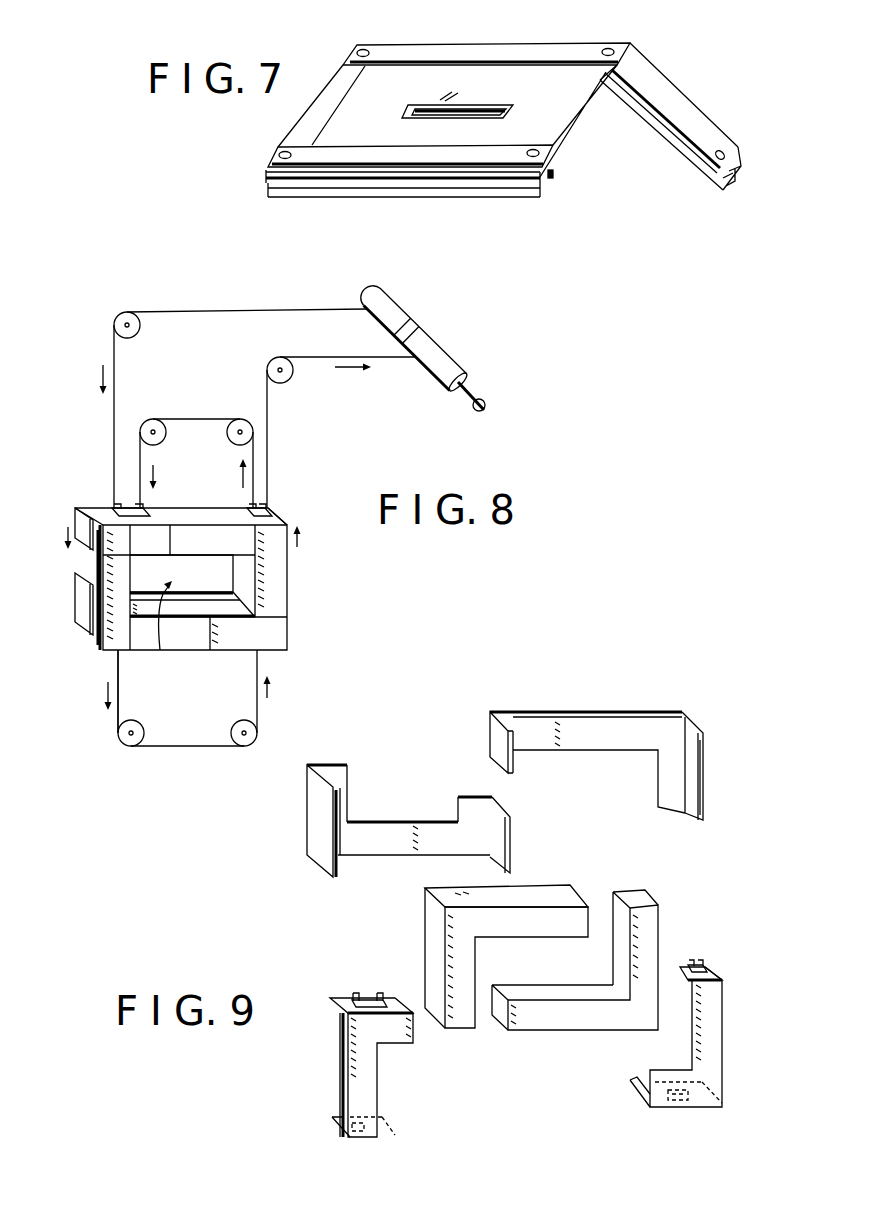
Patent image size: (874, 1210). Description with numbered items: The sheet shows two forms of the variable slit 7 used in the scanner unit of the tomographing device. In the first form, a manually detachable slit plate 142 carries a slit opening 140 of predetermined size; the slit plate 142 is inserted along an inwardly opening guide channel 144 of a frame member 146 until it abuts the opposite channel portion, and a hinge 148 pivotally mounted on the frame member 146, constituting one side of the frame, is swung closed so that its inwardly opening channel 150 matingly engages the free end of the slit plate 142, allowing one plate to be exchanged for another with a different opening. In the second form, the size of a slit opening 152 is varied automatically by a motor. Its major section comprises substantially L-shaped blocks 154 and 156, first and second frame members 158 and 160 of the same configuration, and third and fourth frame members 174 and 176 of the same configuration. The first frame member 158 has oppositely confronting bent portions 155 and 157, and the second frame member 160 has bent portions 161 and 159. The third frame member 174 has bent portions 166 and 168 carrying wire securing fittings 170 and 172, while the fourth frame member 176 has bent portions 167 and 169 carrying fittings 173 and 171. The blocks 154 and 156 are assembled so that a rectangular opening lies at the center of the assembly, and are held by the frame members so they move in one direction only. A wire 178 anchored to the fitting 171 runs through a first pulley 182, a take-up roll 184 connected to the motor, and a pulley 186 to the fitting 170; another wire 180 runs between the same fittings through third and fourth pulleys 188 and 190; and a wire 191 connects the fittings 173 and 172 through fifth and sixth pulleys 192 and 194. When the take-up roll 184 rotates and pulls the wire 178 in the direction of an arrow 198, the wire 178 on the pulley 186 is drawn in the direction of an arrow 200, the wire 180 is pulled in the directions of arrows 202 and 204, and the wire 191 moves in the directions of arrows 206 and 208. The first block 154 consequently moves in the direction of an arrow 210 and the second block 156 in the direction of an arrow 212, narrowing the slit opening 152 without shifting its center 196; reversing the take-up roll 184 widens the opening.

In FIG. 7, the variable slit 7 is at (504, 23).
In FIG. 8, the variable slit 7 is at (338, 582).
In FIG. 7, the slit opening 140 is at (497, 107).
In FIG. 7, the slit plate 142 is at (580, 102).
In FIG. 7, the guide channel 144 is at (553, 178).
In FIG. 7, the frame member 146 is at (302, 183).
In FIG. 7, the hinge 148 is at (710, 137).
In FIG. 7, the channel 150 is at (737, 180).
In FIG. 8, the slit opening 152 is at (224, 567).
In FIG. 8, the first L-shaped block 154 is at (203, 509).
In FIG. 9, the first L-shaped block 154 is at (558, 895).
In FIG. 8, the bent portion 155 is at (82, 598).
In FIG. 9, the bent portion 155 is at (320, 840).
In FIG. 8, the second L-shaped block 156 is at (192, 635).
In FIG. 9, the second L-shaped block 156 is at (570, 1023).
In FIG. 9, the bent portion 157 is at (500, 828).
In FIG. 9, the first frame member 158 is at (397, 830).
In FIG. 9, the bent portion 159 is at (692, 765).
In FIG. 9, the second frame member 160 is at (647, 722).
In FIG. 8, the bent portion 161 is at (75, 510).
In FIG. 9, the bent portion 161 is at (497, 738).
In FIG. 8, the bent portion 166 is at (174, 510).
In FIG. 9, the bent portion 166 is at (340, 1022).
In FIG. 9, the bent portion 167 is at (637, 1100).
In FIG. 9, the bent portion 168 is at (342, 1117).
In FIG. 8, the bent portion 169 is at (283, 517).
In FIG. 9, the bent portion 169 is at (715, 970).
In FIG. 8, the wire securing fitting 170 is at (103, 507).
In FIG. 9, the wire securing fitting 170 is at (368, 998).
In FIG. 8, the wire securing fitting 171 is at (270, 507).
In FIG. 9, the wire securing fitting 171 is at (695, 962).
In FIG. 9, the wire securing fitting 172 is at (350, 1137).
In FIG. 9, the wire securing fitting 173 is at (673, 1107).
In FIG. 8, the third frame member 174 is at (75, 507).
In FIG. 9, the third frame member 174 is at (343, 998).
In FIG. 8, the fourth frame member 176 is at (277, 597).
In FIG. 9, the fourth frame member 176 is at (713, 1038).
In FIG. 8, the wire 178 is at (270, 424).
In FIG. 8, the wire 180 is at (196, 415).
In FIG. 8, the first pulley 182 is at (292, 380).
In FIG. 8, the take-up roll 184 is at (437, 352).
In FIG. 8, the pulley 186 is at (135, 330).
In FIG. 8, the third pulley 188 is at (245, 419).
In FIG. 8, the fourth pulley 190 is at (147, 419).
In FIG. 8, the wire 191 is at (193, 748).
In FIG. 8, the fifth pulley 192 is at (233, 728).
In FIG. 8, the sixth pulley 194 is at (120, 737).
In FIG. 8, the center of slit opening 196 is at (153, 630).
In FIG. 8, the arrow 198 is at (350, 372).
In FIG. 8, the arrow 200 is at (100, 368).
In FIG. 8, the arrow 202 is at (155, 466).
In FIG. 8, the arrow 204 is at (240, 463).
In FIG. 8, the arrow 206 is at (100, 690).
In FIG. 8, the arrow 208 is at (272, 683).
In FIG. 8, the arrow 210 is at (62, 529).
In FIG. 8, the arrow 212 is at (304, 531).